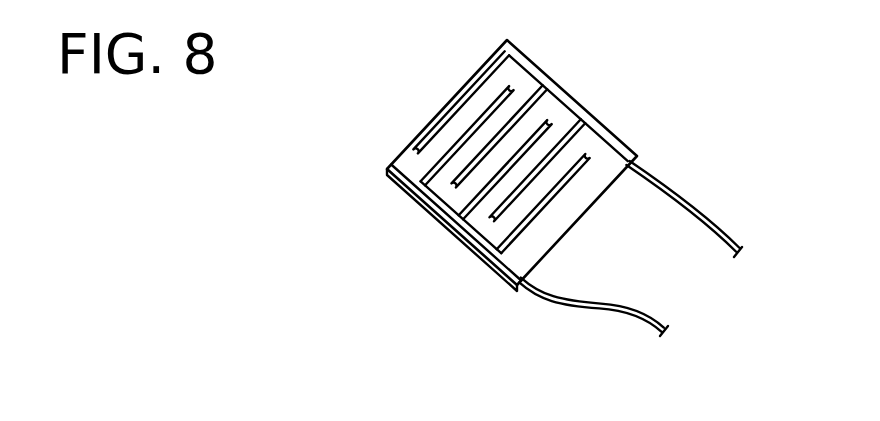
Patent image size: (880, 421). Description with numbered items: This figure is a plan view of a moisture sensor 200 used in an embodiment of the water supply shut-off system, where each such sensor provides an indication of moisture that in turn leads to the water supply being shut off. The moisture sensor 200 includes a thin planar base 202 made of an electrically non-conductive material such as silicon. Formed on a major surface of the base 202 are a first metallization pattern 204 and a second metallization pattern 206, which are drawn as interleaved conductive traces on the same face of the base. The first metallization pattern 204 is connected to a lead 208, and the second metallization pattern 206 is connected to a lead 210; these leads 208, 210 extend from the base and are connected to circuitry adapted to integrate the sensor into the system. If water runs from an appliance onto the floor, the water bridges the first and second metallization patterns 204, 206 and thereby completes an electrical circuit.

The moisture sensor 200 is at (628, 78).
The thin planar base 202 is at (447, 243).
The first metallization pattern 204 is at (414, 143).
The second metallization pattern 206 is at (492, 103).
The lead 208 is at (595, 311).
The lead 210 is at (677, 200).